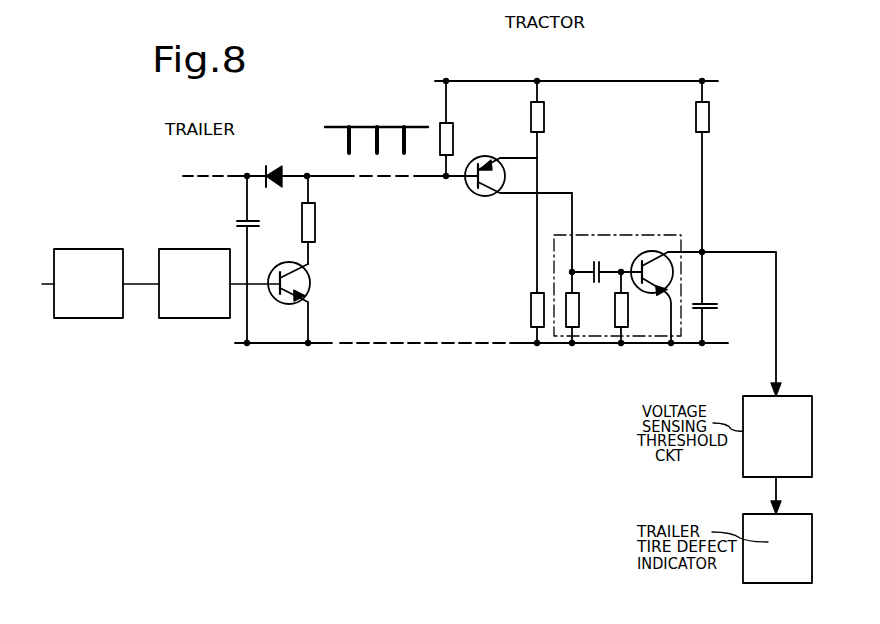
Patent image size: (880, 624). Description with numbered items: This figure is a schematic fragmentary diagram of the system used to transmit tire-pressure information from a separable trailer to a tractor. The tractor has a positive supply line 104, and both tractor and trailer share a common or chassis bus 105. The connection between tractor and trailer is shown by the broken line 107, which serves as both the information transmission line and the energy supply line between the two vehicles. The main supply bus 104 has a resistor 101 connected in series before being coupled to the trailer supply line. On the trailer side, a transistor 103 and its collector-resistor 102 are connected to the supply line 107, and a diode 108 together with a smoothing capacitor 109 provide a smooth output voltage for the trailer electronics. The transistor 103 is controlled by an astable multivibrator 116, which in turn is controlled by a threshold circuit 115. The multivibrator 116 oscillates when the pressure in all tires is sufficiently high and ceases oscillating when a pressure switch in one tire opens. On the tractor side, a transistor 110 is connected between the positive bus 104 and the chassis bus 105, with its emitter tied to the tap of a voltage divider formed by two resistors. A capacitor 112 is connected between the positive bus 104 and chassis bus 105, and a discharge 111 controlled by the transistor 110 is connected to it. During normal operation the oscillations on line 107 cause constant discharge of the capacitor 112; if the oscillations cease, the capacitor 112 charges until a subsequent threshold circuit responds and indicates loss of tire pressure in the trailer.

The resistor 101 is at (456, 133).
The collector-resistor 102 is at (318, 223).
The transistor 103 is at (288, 303).
The positive supply line 104 is at (502, 80).
The chassis bus 105 is at (290, 346).
The broken line 107 is at (406, 178).
The diode 108 is at (277, 165).
The smoothing capacitor 109 is at (236, 222).
The transistor 110 is at (490, 197).
The discharge 111 is at (660, 332).
The capacitor 112 is at (718, 306).
The threshold circuit 115 is at (95, 320).
The astable multivibrator 116 is at (190, 320).